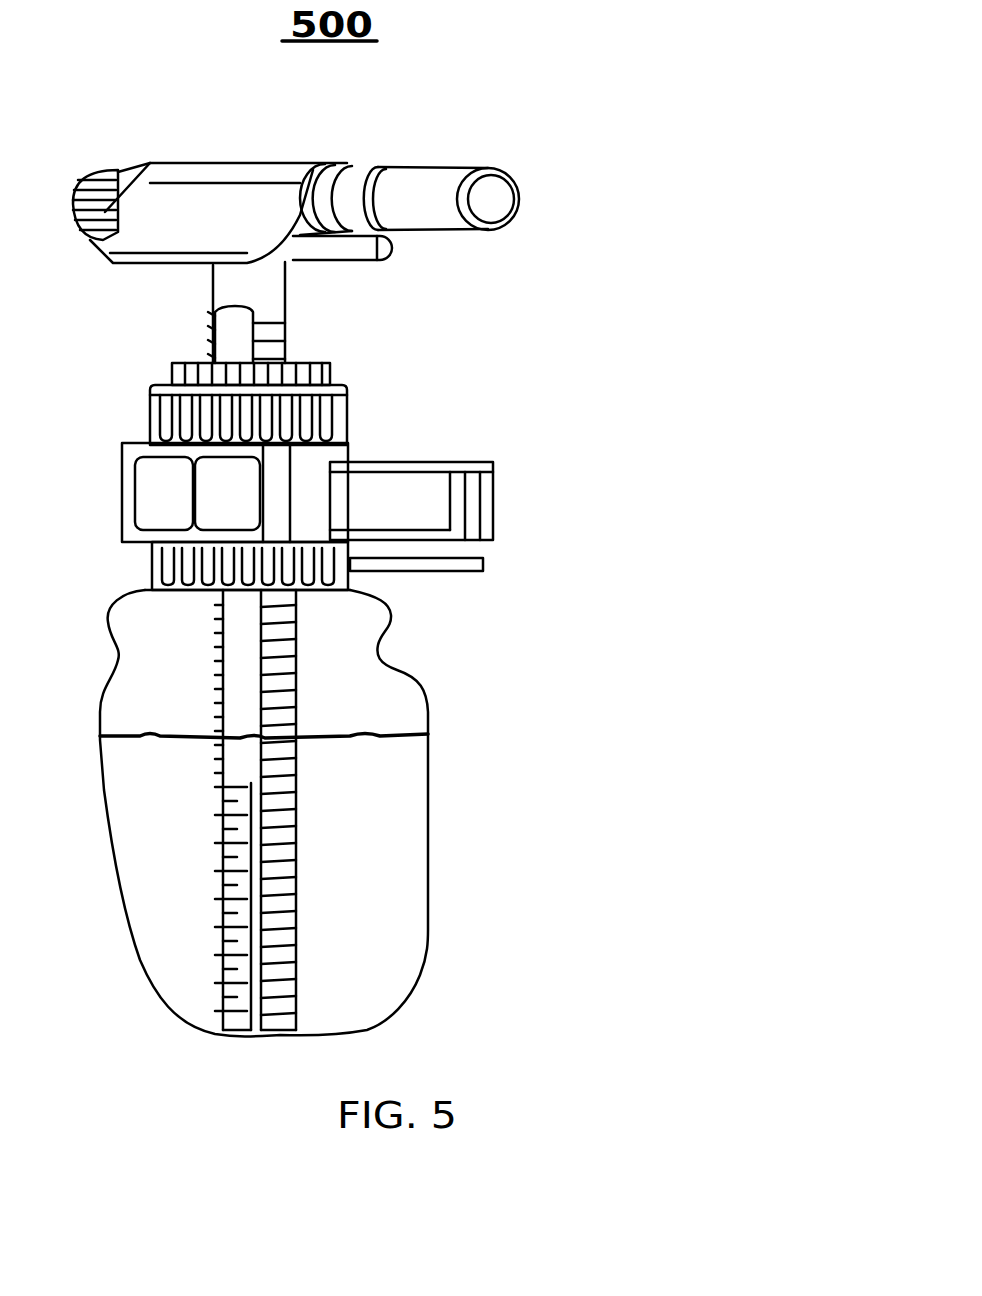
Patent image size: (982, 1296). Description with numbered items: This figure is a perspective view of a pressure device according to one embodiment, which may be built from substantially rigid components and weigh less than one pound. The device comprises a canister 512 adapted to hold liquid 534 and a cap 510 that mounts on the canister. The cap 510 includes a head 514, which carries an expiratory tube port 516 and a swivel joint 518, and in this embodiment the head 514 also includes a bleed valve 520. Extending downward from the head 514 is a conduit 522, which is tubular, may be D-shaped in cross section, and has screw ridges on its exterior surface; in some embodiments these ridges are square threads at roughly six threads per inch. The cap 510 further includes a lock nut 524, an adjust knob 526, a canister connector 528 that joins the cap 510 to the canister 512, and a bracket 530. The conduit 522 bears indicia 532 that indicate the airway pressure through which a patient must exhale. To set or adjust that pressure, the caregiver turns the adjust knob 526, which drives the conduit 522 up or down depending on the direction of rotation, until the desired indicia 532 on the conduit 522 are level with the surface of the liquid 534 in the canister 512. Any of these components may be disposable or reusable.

The cap 510 is at (710, 308).
The canister 512 is at (693, 857).
The head 514 is at (295, 120).
The expiratory tube port 516 is at (437, 167).
The swivel joint 518 is at (340, 167).
The bleed valve 520 is at (105, 173).
The conduit 522 is at (285, 315).
The lock nut 524 is at (312, 353).
The adjust knob 526 is at (352, 402).
The canister connector 528 is at (462, 567).
The bracket 530 is at (453, 462).
The indicia 532 is at (297, 935).
The liquid 534 is at (370, 742).